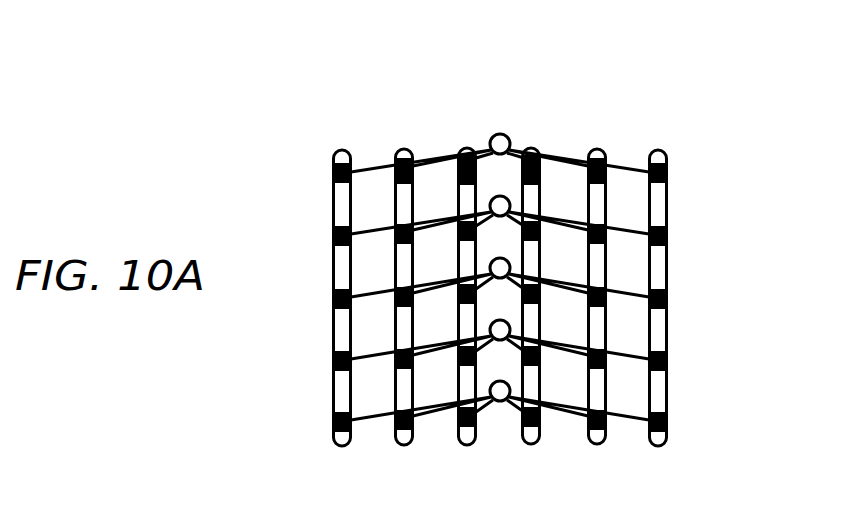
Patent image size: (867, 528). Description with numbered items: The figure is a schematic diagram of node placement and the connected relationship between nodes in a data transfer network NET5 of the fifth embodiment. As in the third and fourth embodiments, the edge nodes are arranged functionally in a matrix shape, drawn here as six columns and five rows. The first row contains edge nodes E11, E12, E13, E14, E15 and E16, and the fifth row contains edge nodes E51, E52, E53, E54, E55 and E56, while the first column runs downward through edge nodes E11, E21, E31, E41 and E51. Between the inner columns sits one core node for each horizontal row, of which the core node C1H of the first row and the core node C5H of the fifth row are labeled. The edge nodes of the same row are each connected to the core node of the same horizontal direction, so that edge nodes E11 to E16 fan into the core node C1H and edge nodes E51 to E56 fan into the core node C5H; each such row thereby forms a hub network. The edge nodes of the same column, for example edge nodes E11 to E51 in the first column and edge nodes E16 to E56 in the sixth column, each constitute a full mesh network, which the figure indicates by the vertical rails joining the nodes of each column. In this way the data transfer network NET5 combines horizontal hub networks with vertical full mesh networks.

The edge node E11 is at (332, 173).
The edge node E21 is at (332, 236).
The edge node E31 is at (332, 298).
The edge node E41 is at (332, 359).
The edge node E51 is at (332, 421).
The edge node E12 is at (404, 150).
The edge node E13 is at (470, 149).
The edge node E14 is at (537, 150).
The edge node E15 is at (601, 151).
The edge node E16 is at (668, 173).
The edge node E52 is at (398, 445).
The edge node E53 is at (458, 446).
The edge node E54 is at (531, 444).
The edge node E55 is at (601, 444).
The edge node E56 is at (668, 421).
The core node C1H is at (503, 133).
The core node C5H is at (499, 402).
The data transfer network NET5 is at (808, 68).